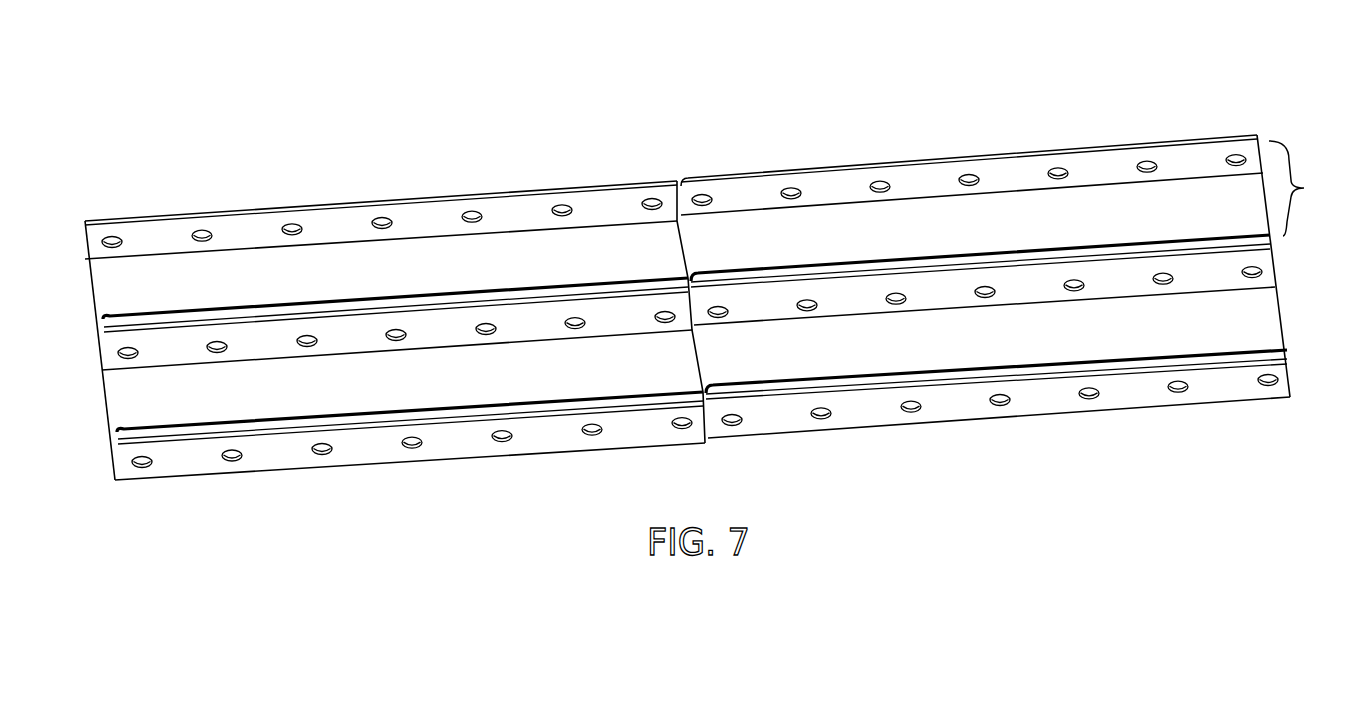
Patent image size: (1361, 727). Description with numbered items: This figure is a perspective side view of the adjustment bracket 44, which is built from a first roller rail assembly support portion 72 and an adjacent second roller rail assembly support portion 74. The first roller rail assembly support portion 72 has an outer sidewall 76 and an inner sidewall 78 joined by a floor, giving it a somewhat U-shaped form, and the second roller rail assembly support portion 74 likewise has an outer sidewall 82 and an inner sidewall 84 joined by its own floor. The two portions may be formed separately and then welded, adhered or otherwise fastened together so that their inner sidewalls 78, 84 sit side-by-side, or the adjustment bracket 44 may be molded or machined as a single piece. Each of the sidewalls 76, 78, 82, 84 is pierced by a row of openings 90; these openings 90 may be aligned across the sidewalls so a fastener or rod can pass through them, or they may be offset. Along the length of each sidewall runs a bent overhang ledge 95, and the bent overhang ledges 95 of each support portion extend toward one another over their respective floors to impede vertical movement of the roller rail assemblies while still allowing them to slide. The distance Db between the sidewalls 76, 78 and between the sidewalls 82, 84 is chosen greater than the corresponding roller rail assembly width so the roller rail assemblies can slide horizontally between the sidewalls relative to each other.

The adjustment bracket 44 is at (1063, 103).
The first roller rail assembly support portion 72 is at (534, 247).
The second roller rail assembly support portion 74 is at (370, 385).
The outer sidewall 76 is at (817, 167).
The inner sidewall 78 is at (1018, 251).
The outer sidewall 82 is at (1128, 400).
The inner sidewall 84 is at (1268, 270).
The openings 90 is at (967, 177).
The bent overhang ledges 95 is at (320, 205).
The distance between the sidewalls Db is at (1308, 188).